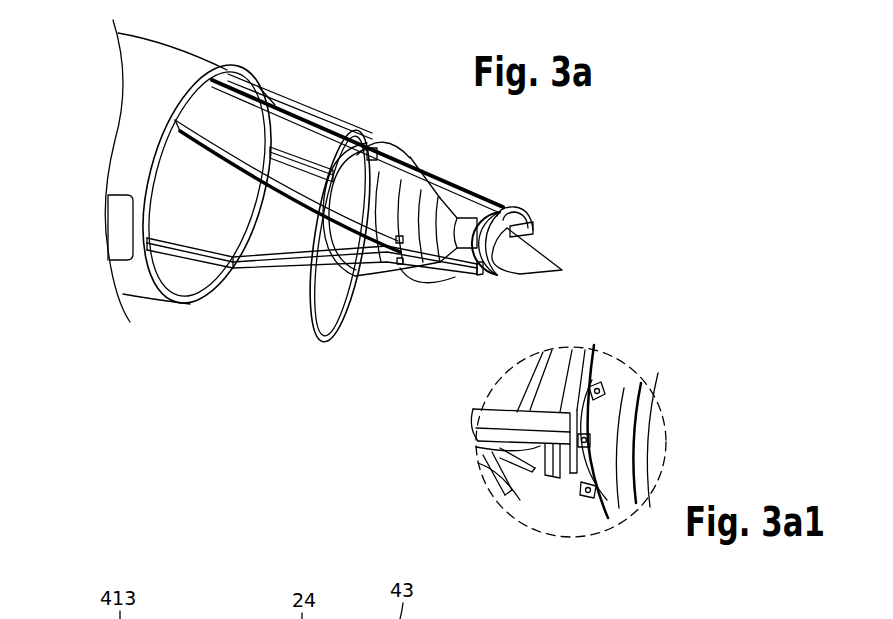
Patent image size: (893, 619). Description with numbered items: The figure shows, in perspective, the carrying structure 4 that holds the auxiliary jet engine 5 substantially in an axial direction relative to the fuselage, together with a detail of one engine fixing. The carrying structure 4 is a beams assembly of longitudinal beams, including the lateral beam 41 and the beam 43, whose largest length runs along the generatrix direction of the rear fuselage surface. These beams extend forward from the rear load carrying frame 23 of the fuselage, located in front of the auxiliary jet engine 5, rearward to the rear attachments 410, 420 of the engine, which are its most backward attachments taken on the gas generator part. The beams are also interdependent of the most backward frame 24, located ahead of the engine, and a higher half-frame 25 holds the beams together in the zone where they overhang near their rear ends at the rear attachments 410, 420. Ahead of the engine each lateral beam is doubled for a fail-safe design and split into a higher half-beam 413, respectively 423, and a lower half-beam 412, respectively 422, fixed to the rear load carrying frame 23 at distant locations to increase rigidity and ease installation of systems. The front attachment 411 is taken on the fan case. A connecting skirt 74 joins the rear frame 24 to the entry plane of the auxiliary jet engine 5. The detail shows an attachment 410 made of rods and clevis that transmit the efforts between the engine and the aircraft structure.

In FIG. 3a, the carrying structure 4 is at (150, 350).
In FIG. 3a, the auxiliary jet engine 5 is at (420, 203).
In FIG. 3a, the rear load carrying frame 23 is at (217, 70).
In FIG. 3a, the most backward frame 24 is at (343, 318).
In FIG. 3a, the higher half-frame 25 is at (508, 210).
In FIG. 3a, the lateral beam 41 is at (467, 268).
In FIG. 3a, the longitudinal beam 43 is at (290, 120).
In FIG. 3a, the connecting skirt 74 is at (377, 177).
In FIG. 3a, the rear attachment 410 is at (512, 358).
In FIG. 3a1, the rear attachment 410 is at (595, 383).
In FIG. 3a, the front attachment 411 is at (400, 266).
In FIG. 3a, the lower half-beam 412 is at (235, 270).
In FIG. 3a, the higher half-beam 413 is at (190, 137).
In FIG. 3a, the rear attachment 420 is at (533, 227).
In FIG. 3a, the lower half-beam 422 is at (320, 167).
In FIG. 3a, the higher half-beam 423 is at (268, 80).